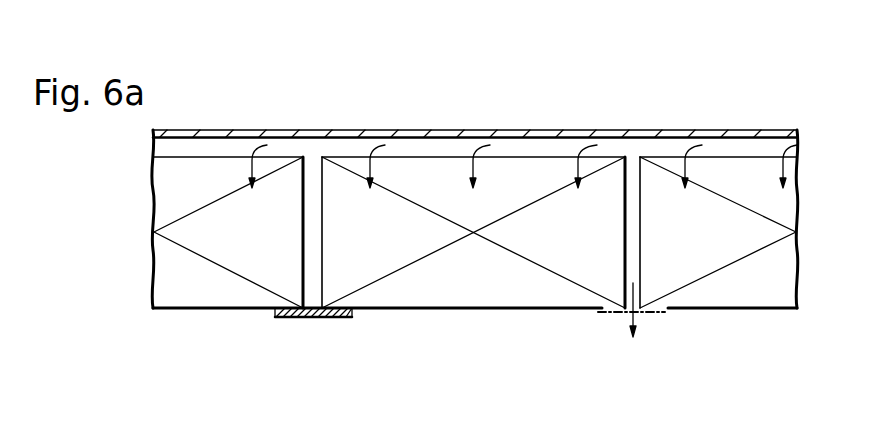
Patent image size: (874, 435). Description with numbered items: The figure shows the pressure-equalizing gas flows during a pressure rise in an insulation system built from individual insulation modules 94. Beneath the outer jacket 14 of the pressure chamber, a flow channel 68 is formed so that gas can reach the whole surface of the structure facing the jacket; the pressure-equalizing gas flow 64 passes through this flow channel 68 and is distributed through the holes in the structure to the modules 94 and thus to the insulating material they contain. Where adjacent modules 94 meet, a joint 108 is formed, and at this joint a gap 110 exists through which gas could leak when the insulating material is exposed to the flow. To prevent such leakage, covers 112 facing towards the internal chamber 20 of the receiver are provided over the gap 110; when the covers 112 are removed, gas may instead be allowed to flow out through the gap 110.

The outer jacket 14 is at (318, 132).
The pressure-equalizing gas flow 64 is at (473, 148).
The joint 108 is at (633, 185).
The flow channel 68 is at (740, 148).
The insulation module 94 is at (186, 287).
The internal chamber 20 is at (537, 370).
The cover 112 is at (620, 312).
The gap 110 is at (633, 243).